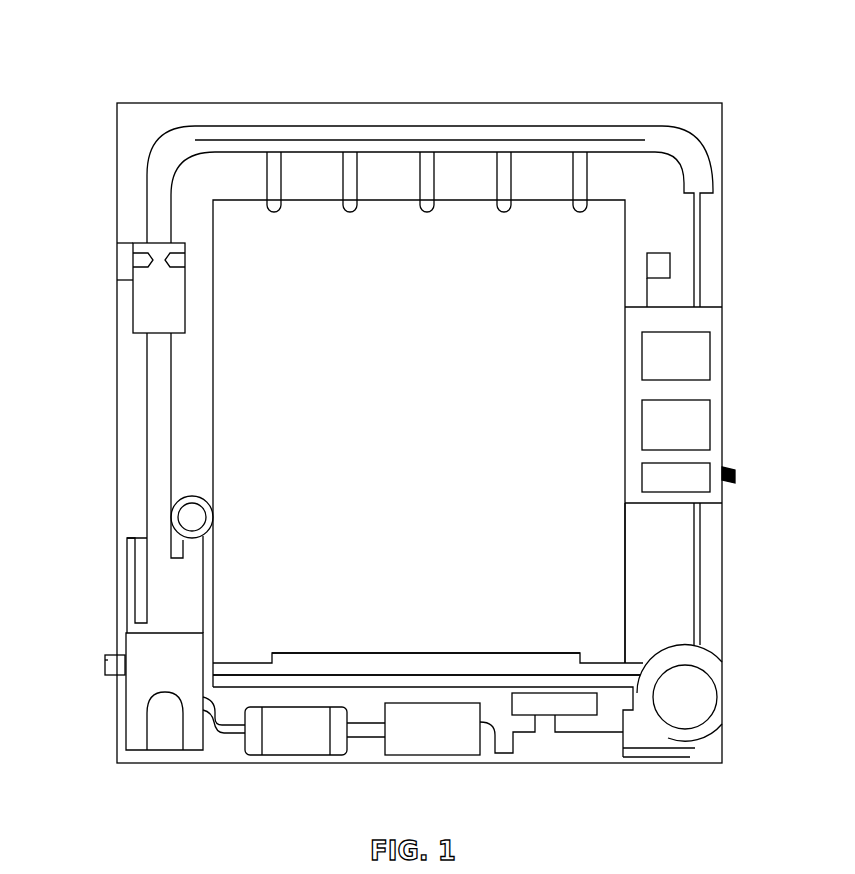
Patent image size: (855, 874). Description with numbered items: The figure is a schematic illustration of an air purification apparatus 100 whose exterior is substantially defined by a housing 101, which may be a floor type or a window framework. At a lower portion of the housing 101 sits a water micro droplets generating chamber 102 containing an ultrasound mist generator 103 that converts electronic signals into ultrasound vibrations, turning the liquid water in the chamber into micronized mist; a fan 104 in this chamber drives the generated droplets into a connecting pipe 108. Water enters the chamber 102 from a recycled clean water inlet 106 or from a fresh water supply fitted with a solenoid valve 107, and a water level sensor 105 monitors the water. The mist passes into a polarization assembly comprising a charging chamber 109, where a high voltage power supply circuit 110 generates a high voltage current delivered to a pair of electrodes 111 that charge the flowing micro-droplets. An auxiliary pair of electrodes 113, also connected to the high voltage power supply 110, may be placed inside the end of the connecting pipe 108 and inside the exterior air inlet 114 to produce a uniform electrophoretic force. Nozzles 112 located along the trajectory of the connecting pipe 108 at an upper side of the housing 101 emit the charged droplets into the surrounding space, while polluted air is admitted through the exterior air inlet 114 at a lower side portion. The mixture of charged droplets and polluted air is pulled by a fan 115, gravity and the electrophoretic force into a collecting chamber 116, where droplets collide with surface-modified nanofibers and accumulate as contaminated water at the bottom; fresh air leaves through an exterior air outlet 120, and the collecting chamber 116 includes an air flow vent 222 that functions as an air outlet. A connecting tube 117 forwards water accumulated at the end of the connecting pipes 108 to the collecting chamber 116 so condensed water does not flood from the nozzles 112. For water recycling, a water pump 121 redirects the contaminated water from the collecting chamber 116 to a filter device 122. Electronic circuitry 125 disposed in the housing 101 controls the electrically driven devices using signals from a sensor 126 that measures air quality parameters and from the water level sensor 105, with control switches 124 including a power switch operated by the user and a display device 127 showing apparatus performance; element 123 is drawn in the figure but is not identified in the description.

The air purification apparatus 100 is at (114, 58).
The housing 101 is at (115, 342).
The water micro droplets generating chamber 102 is at (125, 632).
The ultrasound mist generator 103 is at (146, 732).
The fan 104 is at (172, 522).
The water level sensor 105 is at (135, 594).
The recycled clean water inlet 106 is at (210, 735).
The solenoid valve 107 is at (105, 656).
The connecting pipe 108 is at (145, 422).
The charging chamber 109 is at (134, 298).
The high voltage power supply circuit 110 is at (130, 240).
The pair of electrodes 111 is at (167, 240).
The nozzles 112 is at (432, 178).
The auxiliary pair of electrodes 113 is at (640, 139).
The exterior air inlet 114 is at (310, 652).
The fan 115 is at (722, 668).
The collecting chamber 116 is at (536, 748).
The connecting tube 117 is at (702, 210).
The exterior air outlets 120 is at (548, 672).
The water pump 121 is at (433, 746).
The filter device 122 is at (293, 746).
The battery 123 is at (736, 484).
The control switches 124 is at (736, 473).
The electronic circuitry 125 is at (710, 415).
The sensor 126 is at (672, 268).
The display device 127 is at (710, 352).
The air flow vent 222 is at (105, 667).